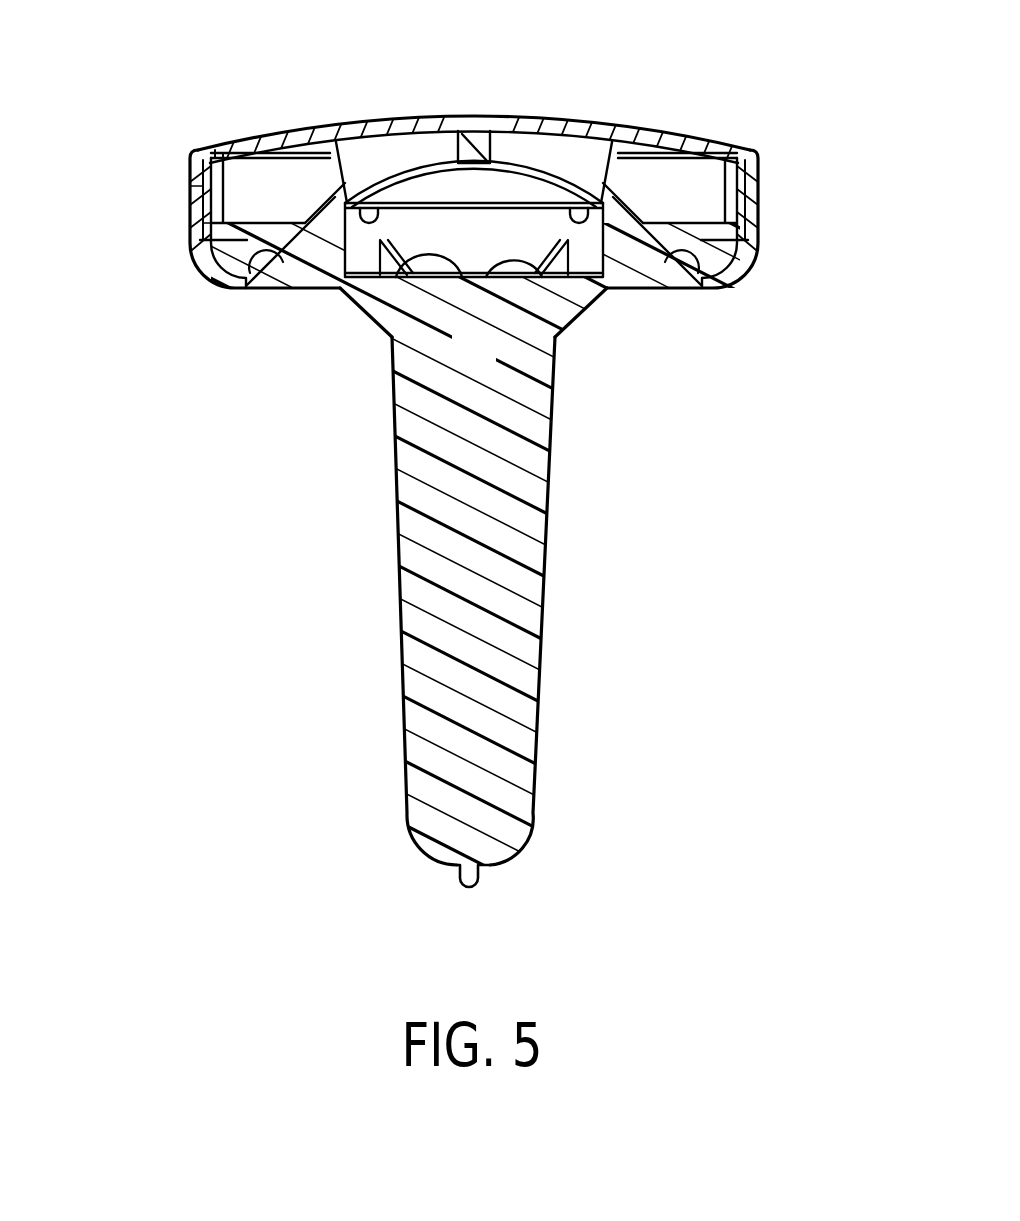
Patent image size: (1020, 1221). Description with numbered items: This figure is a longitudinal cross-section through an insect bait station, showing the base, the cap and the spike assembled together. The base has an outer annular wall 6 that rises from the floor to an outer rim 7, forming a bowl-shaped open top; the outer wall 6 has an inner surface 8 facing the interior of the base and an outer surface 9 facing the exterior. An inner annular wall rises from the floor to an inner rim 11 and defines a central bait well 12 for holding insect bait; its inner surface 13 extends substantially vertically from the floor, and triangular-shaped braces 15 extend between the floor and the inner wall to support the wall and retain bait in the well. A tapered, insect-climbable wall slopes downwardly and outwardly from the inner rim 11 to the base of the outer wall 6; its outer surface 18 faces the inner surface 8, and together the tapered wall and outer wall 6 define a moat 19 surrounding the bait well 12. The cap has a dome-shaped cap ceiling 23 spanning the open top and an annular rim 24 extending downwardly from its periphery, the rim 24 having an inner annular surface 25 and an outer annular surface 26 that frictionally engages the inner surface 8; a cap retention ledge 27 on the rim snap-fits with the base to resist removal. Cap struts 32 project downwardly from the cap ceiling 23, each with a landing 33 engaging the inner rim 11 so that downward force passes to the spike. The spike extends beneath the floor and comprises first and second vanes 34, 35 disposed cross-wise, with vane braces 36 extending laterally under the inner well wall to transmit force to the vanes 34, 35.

The outer annular wall 6 is at (197, 247).
The outer rim 7 is at (200, 148).
The inner surface 8 is at (240, 262).
The outer surface 9 is at (190, 182).
The inner rim 11 is at (345, 150).
The central bait well 12 is at (472, 236).
The inner surface 13 is at (362, 295).
The triangular-shaped braces 15 is at (478, 277).
The outer surface 18 is at (258, 283).
The moat 19 is at (277, 200).
The cap ceiling 23 is at (433, 115).
The annular rim 24 is at (214, 150).
The inner annular surface 25 is at (238, 155).
The outer annular surface 26 is at (192, 187).
The cap retention ledge 27 is at (207, 225).
The cap struts 32 is at (473, 133).
The landing 33 is at (380, 203).
The first vane 34 is at (471, 887).
The second vane 35 is at (545, 625).
The vane braces 36 is at (385, 338).